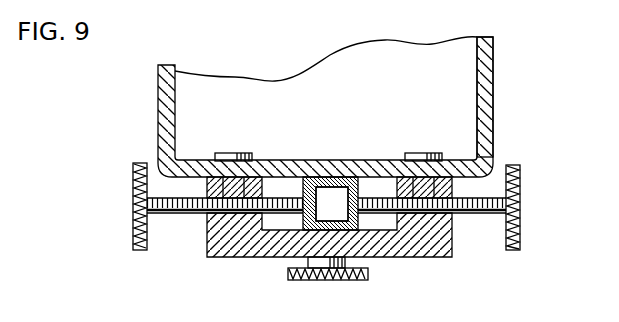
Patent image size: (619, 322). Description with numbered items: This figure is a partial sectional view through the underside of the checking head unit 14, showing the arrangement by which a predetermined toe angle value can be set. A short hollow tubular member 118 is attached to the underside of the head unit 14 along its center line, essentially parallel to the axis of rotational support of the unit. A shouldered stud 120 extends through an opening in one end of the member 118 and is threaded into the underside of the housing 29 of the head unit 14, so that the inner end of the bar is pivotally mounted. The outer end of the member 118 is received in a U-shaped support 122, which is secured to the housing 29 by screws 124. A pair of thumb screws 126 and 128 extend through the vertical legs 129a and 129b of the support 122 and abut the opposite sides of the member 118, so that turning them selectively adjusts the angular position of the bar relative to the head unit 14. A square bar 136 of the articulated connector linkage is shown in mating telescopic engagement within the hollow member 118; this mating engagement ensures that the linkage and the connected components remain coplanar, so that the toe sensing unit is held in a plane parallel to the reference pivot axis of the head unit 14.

The head unit 14 is at (497, 58).
The housing 29 is at (490, 104).
The screws 124 is at (223, 154).
The square bar 136 is at (310, 187).
The hollow tubular member 118 is at (318, 180).
The thumb screw 128 is at (132, 192).
The thumb screw 126 is at (521, 191).
The vertical leg 129a is at (215, 226).
The vertical leg 129b is at (452, 248).
The U-shaped support 122 is at (246, 250).
The shouldered stud 120 is at (368, 274).